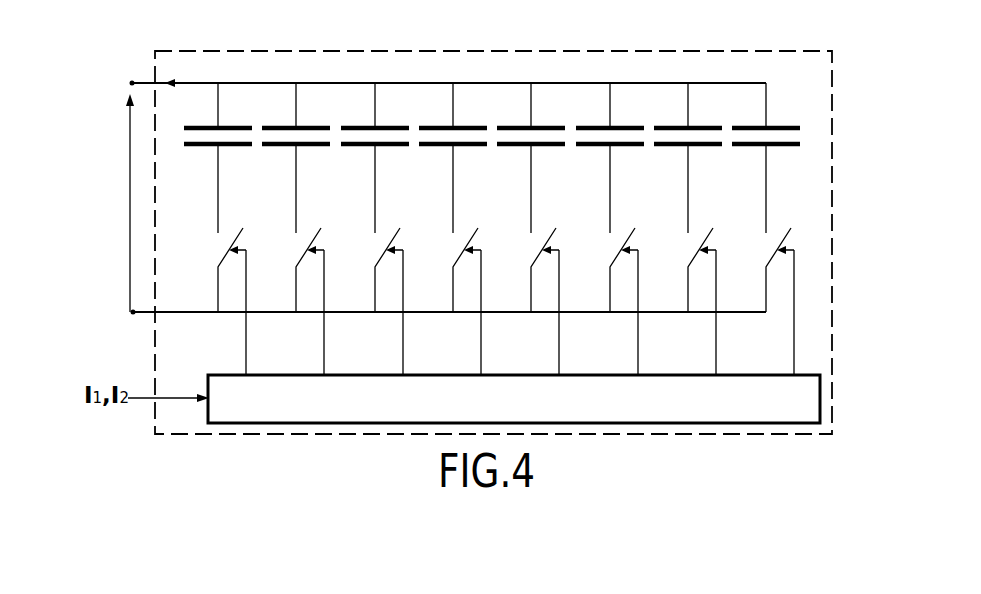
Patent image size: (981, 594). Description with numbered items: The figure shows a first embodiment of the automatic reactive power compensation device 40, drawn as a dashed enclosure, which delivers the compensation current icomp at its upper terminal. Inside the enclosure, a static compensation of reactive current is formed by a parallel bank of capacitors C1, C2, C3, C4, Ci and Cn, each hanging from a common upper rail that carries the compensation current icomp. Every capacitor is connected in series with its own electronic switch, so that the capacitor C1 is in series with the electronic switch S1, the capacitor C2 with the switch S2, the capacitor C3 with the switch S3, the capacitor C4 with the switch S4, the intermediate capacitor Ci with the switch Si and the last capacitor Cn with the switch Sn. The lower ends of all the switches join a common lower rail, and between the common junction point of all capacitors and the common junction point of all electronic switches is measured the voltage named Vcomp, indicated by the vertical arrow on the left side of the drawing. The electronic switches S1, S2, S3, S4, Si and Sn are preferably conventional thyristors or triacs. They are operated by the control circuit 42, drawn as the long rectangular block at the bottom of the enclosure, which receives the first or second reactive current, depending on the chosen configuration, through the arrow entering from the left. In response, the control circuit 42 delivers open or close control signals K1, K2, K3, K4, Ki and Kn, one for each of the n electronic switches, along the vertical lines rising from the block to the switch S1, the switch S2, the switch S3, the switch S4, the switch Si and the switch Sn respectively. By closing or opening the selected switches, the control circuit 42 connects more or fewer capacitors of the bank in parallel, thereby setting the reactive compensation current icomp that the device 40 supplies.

The automatic reactive power compensation device 40 is at (233, 50).
The control circuit 42 is at (530, 409).
The capacitor Cn is at (218, 158).
The capacitor Ci is at (375, 158).
The capacitor C4 is at (531, 158).
The capacitor C3 is at (610, 158).
The capacitor C2 is at (688, 158).
The capacitor C1 is at (766, 158).
The electronic switch Sn is at (217, 270).
The electronic switch Si is at (375, 270).
The electronic switch S4 is at (530, 270).
The electronic switch S3 is at (609, 270).
The electronic switch S2 is at (687, 270).
The electronic switch S1 is at (765, 270).
The control signal Kn is at (228, 310).
The control signal Ki is at (385, 310).
The control signal K4 is at (541, 310).
The control signal K3 is at (620, 310).
The control signal K2 is at (698, 310).
The control signal K1 is at (776, 310).
The compensation current icomp is at (448, 73).
The compensation voltage Vcomp is at (103, 203).